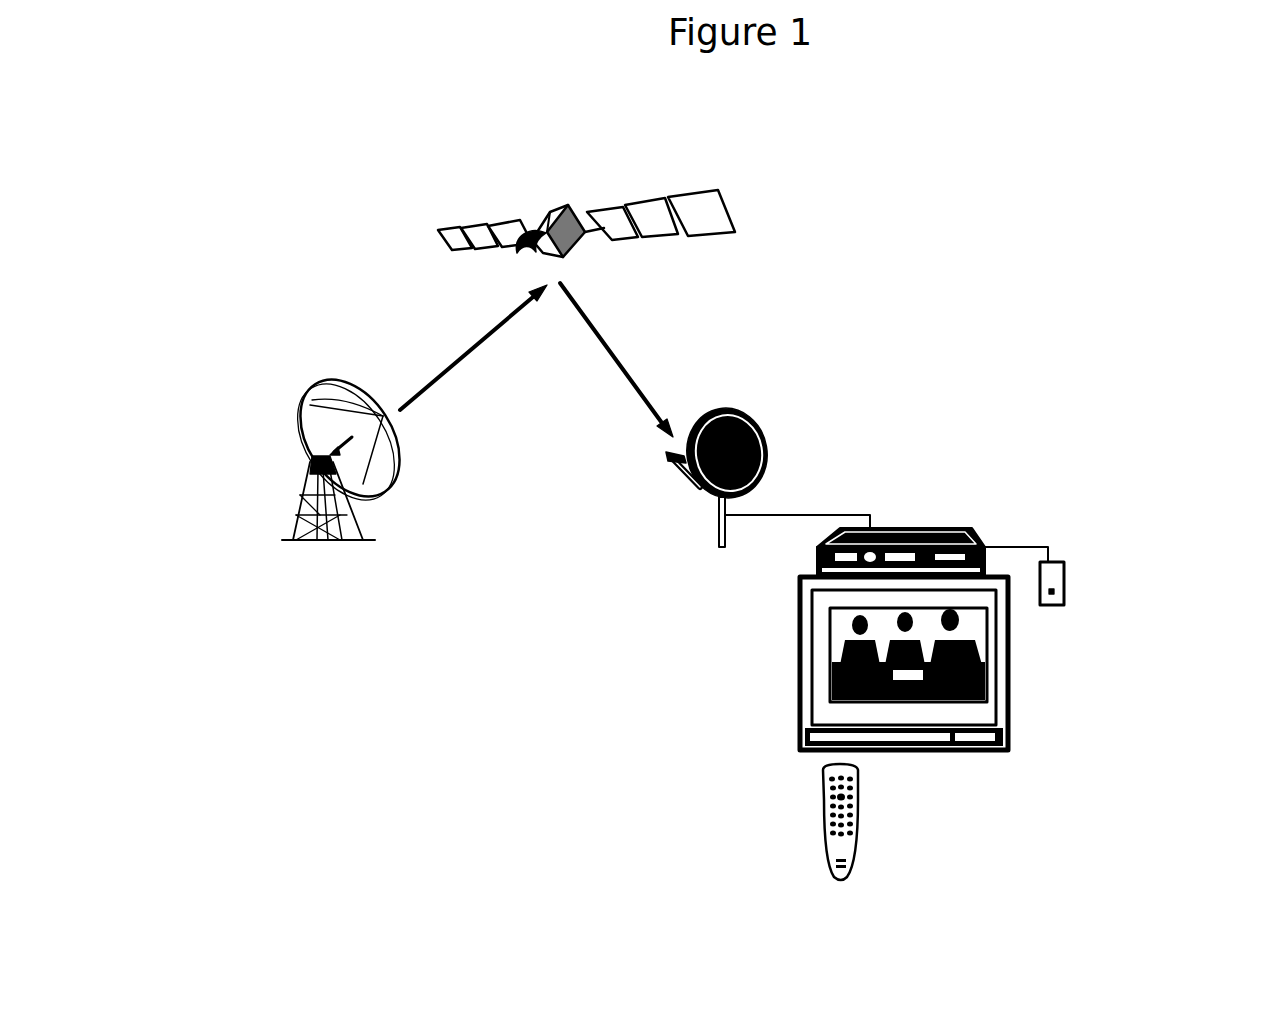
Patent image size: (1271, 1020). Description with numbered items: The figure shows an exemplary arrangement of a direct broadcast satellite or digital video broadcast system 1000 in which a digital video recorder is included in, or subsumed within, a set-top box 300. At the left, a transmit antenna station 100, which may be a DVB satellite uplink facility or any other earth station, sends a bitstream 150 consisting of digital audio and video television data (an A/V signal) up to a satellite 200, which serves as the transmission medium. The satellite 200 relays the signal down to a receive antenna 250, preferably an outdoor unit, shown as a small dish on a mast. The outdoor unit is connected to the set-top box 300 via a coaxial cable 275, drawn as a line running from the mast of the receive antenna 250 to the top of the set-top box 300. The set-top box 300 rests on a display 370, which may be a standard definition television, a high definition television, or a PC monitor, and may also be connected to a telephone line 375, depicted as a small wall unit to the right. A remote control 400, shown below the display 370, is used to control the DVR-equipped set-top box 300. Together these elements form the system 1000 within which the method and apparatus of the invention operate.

The transmit antenna station 100 is at (293, 540).
The bitstream 150 is at (467, 348).
The satellite 200 is at (730, 223).
The receive antenna 250 is at (700, 495).
The coaxial cable 275 is at (797, 515).
The set-top box 300 is at (940, 520).
The display 370 is at (1007, 740).
The telephone line 375 is at (1064, 590).
The remote control 400 is at (823, 830).
The system 1000 is at (1088, 270).